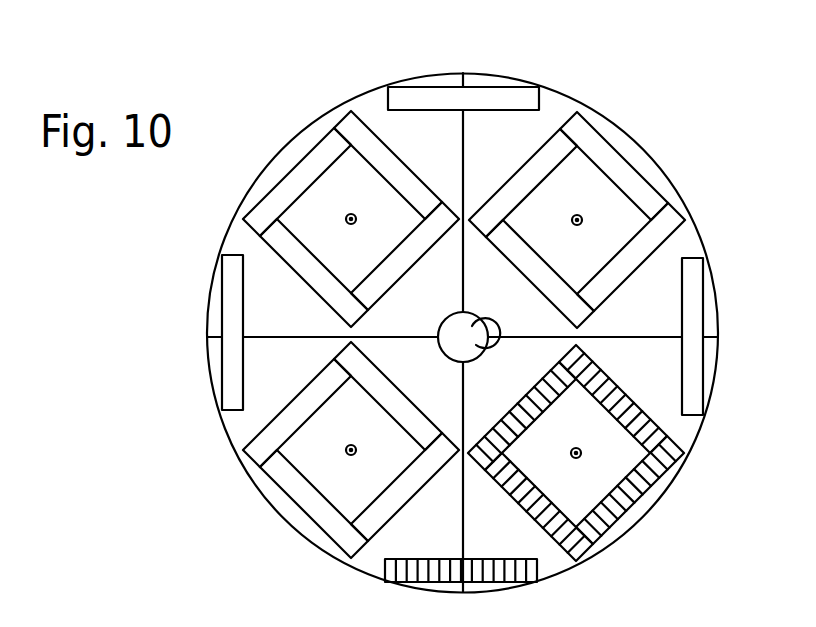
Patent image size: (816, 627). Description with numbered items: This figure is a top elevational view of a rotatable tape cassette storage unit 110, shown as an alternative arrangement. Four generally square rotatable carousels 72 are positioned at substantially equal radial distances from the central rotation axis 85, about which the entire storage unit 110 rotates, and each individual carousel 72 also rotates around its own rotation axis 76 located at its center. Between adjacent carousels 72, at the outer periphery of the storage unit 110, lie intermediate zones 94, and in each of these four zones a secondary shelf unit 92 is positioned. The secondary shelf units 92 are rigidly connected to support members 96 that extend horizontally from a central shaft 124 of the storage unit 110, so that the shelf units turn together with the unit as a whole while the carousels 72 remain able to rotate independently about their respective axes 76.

The rotatable storage unit 110 is at (158, 425).
The secondary shelf unit 92 is at (477, 87).
The support member 96 is at (465, 115).
The intermediate zone 94 is at (259, 313).
The central shaft 124 is at (478, 323).
The central rotation axis 85 is at (467, 345).
The rotatable carousel 72 is at (320, 208).
The rotation axis 76 is at (354, 213).